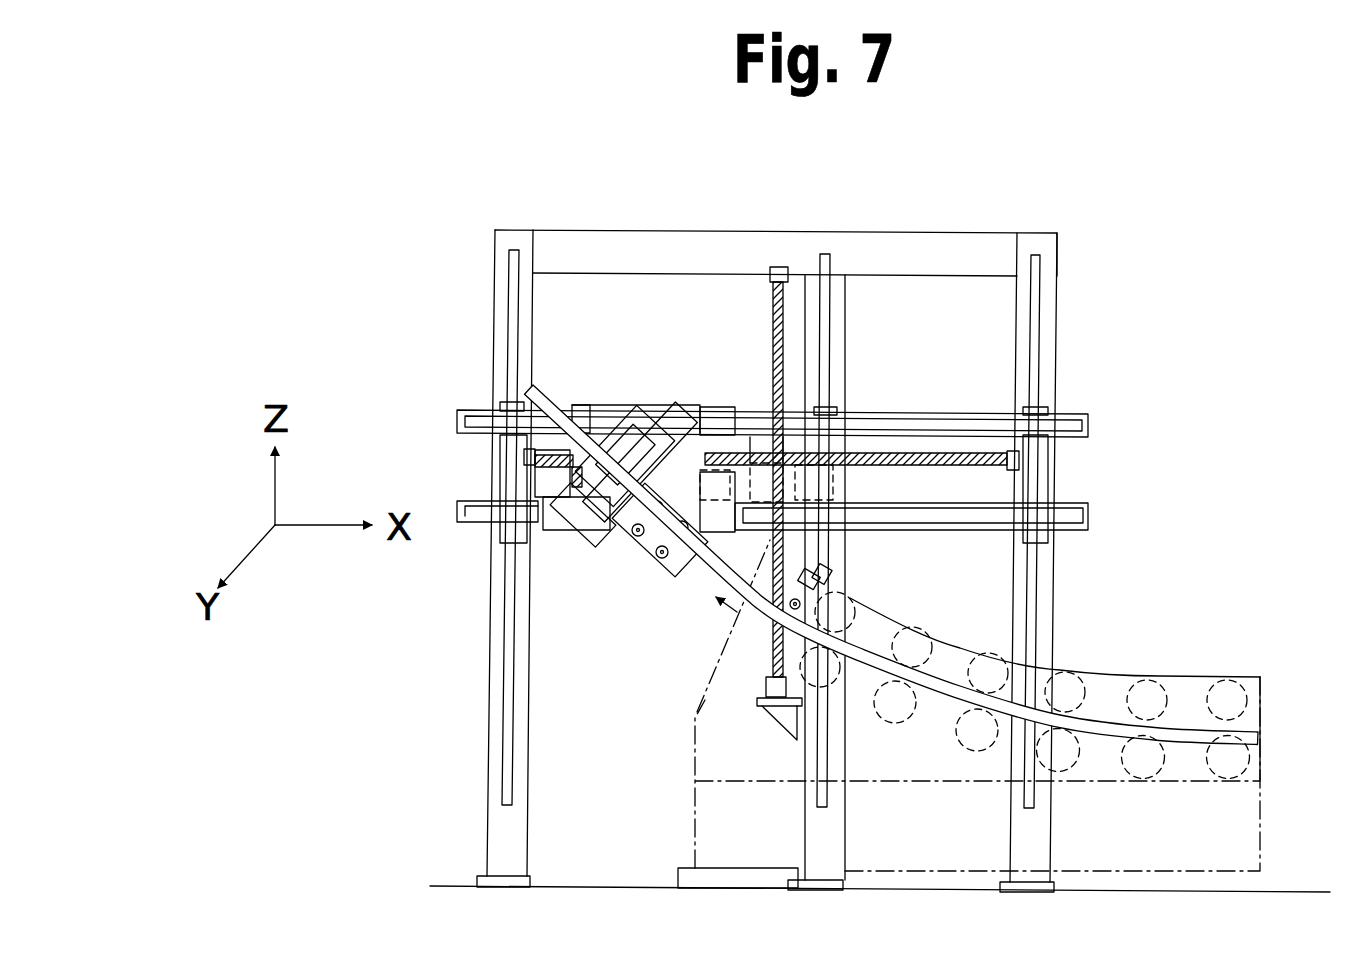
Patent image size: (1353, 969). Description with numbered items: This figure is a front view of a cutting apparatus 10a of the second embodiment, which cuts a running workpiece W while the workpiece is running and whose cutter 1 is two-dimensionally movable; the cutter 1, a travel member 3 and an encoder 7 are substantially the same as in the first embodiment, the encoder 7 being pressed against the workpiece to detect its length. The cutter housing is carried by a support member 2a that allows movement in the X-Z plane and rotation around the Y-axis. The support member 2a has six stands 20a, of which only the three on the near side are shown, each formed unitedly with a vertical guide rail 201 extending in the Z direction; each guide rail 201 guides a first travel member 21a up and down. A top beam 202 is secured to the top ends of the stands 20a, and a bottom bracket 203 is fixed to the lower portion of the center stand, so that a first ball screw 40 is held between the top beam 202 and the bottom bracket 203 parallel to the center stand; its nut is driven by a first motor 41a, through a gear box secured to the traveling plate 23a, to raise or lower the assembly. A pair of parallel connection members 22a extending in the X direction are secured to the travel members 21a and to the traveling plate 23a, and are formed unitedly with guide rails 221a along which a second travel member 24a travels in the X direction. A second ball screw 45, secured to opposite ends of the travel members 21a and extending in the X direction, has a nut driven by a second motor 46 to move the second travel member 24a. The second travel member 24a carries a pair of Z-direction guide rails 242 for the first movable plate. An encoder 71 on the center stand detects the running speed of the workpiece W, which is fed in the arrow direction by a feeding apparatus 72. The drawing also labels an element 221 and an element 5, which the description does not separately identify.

The cutting apparatus 10a is at (480, 224).
The top beam 202 is at (652, 244).
The support member 2a is at (689, 228).
The stands 20a is at (537, 300).
The vertical guide rail 201 is at (512, 262).
The first travel member 21a is at (510, 462).
The connection members 22a is at (905, 415).
The second ball screw 45 is at (1015, 470).
The first ball screw 40 is at (783, 305).
The traveling plate 23a is at (762, 445).
The first motor 41a is at (822, 475).
The bottom bracket 203 is at (790, 718).
The second travel member 24a is at (620, 407).
The guide rails 242 is at (584, 405).
The guide rails 221a is at (718, 420).
The slide block 221 is at (728, 545).
The cutter 1 is at (655, 420).
The travel member 3 is at (627, 541).
The roller 5 is at (637, 548).
The encoder 7 is at (667, 562).
The second motor 46 is at (690, 545).
The workpiece W is at (1182, 730).
The encoder for detecting workpiece speed 71 is at (835, 578).
The feeding apparatus 72 is at (1068, 690).